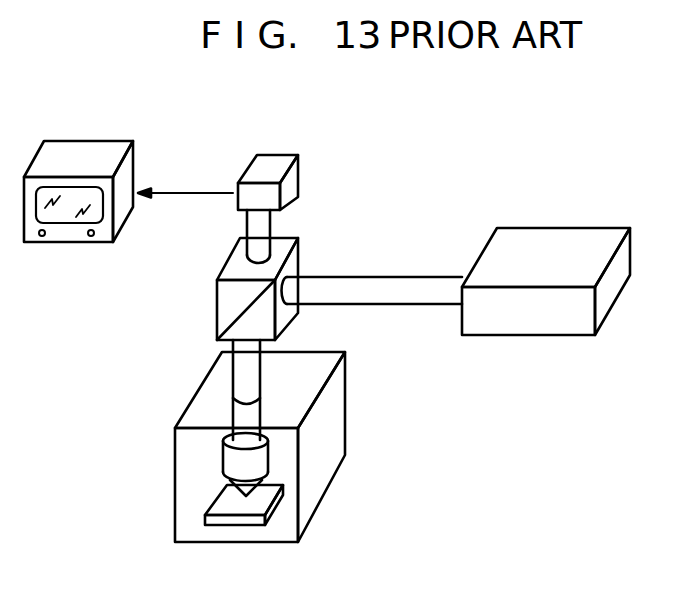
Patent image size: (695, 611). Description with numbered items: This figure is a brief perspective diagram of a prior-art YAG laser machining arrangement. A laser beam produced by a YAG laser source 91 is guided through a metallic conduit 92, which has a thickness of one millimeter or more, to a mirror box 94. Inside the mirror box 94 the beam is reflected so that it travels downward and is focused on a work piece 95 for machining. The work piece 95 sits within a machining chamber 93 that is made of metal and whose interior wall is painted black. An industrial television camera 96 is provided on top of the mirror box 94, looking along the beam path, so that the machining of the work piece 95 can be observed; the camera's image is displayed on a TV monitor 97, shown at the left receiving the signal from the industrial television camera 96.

The YAG laser source 91 is at (542, 235).
The metallic conduit 92 is at (248, 367).
The machining chamber 93 is at (330, 457).
The mirror box 94 is at (217, 311).
The work piece 95 is at (210, 520).
The industrial television camera 96 is at (300, 165).
The TV monitor 97 is at (97, 141).